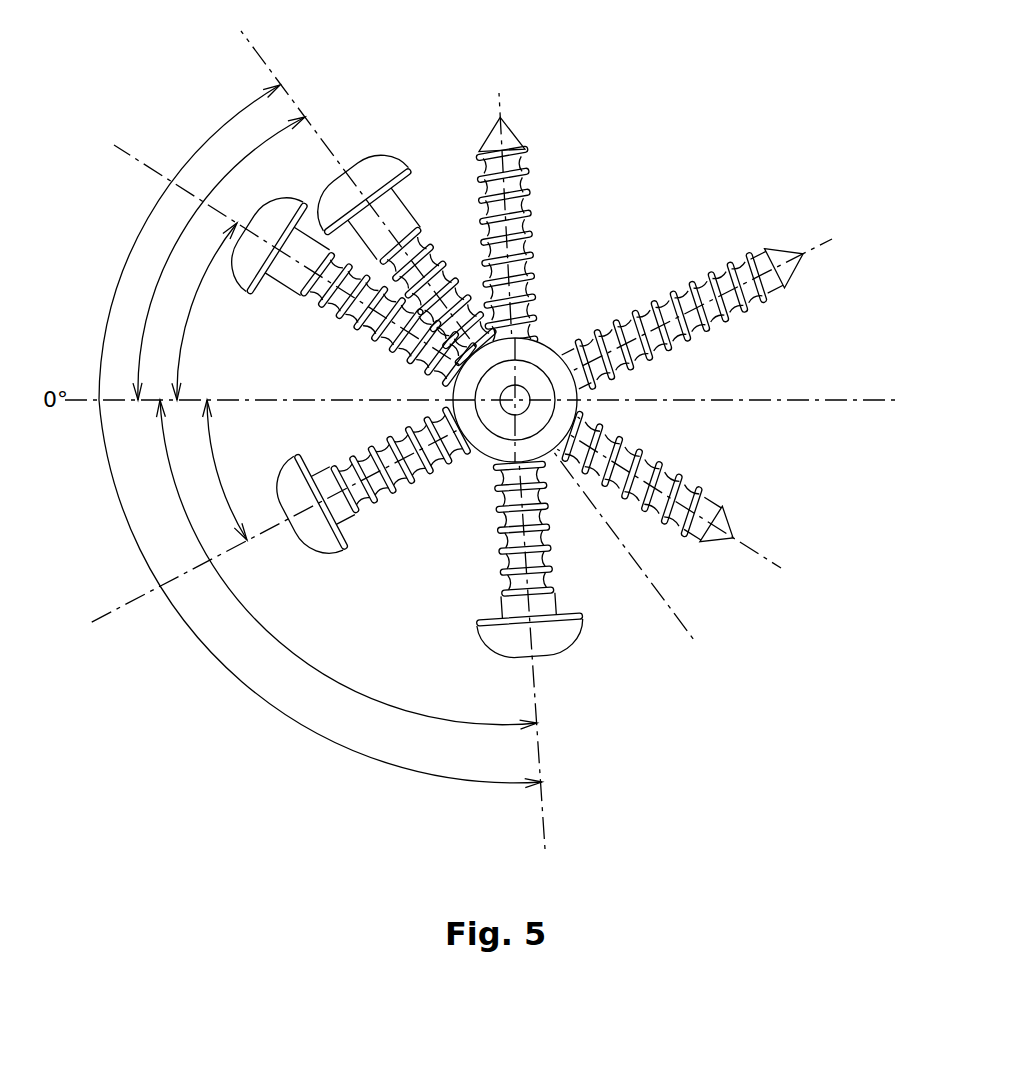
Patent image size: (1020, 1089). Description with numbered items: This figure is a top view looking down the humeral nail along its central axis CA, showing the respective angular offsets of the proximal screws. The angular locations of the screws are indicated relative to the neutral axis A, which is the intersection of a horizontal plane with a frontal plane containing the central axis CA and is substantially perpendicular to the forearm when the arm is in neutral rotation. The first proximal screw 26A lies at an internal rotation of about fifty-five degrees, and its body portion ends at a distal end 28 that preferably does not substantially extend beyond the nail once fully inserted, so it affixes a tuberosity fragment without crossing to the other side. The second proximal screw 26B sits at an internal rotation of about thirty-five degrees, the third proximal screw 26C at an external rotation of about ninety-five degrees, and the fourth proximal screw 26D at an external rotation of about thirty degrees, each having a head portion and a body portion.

The first proximal screw 26A is at (383, 175).
The second proximal screw 26B is at (275, 225).
The third proximal screw 26C is at (547, 638).
The fourth proximal screw 26D is at (318, 530).
The distal end 28 is at (572, 487).
The central axis CA is at (528, 388).
The neutral axis A is at (820, 400).